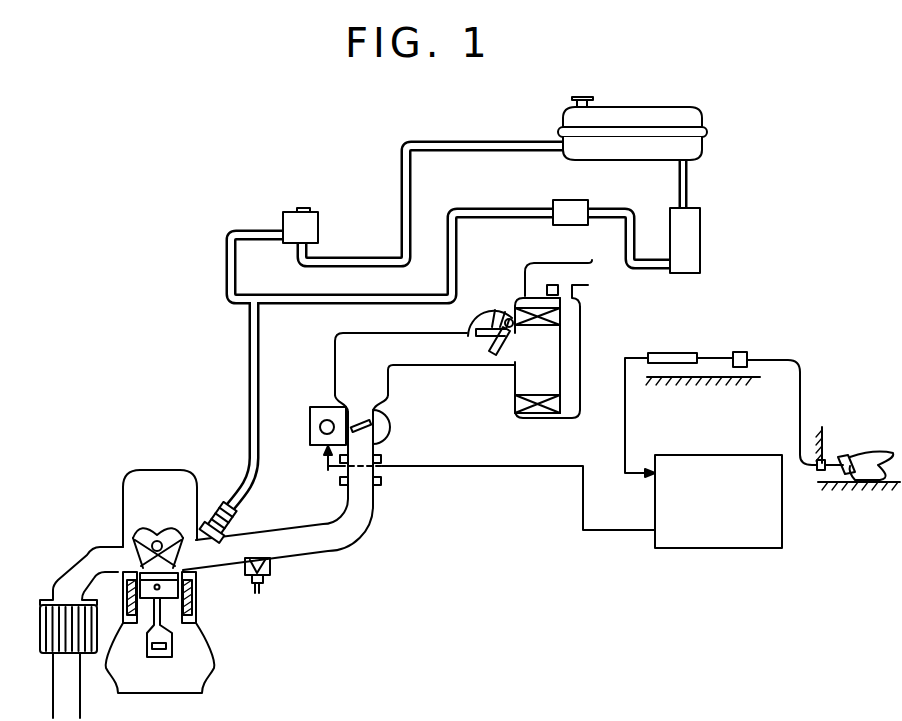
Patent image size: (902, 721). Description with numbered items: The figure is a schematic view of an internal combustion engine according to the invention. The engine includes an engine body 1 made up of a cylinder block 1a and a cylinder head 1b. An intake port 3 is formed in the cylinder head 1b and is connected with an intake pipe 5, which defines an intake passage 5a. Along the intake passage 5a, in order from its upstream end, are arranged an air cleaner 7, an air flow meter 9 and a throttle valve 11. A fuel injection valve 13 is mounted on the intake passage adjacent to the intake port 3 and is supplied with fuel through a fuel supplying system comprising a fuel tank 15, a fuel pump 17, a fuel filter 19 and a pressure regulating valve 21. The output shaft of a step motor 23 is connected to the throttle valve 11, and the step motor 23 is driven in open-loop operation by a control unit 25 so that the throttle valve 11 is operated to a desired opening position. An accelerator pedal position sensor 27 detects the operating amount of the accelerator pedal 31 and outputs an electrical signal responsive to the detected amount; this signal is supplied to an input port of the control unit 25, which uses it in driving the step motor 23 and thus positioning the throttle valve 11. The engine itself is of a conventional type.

The engine 1 is at (196, 606).
The crankcase 1a is at (213, 656).
The cylinder head 1b is at (124, 487).
The fuel injector 3 is at (186, 562).
The intake passage 5 is at (350, 533).
The intake pipe 5a is at (317, 543).
The air cleaner 7 is at (562, 313).
The throttle valve 9 is at (488, 308).
The throttle sensor 11 is at (365, 420).
The purge pipe fitting 13 is at (238, 522).
The fuel tank 15 is at (702, 118).
The canister 17 is at (700, 208).
The check valve 19 is at (582, 200).
The purge control valve 21 is at (312, 210).
The intake pressure sensor 23 is at (310, 437).
The control unit 25 is at (784, 525).
The accelerator pedal position sensor 27 is at (678, 353).
The accelerator pedal 31 is at (838, 457).